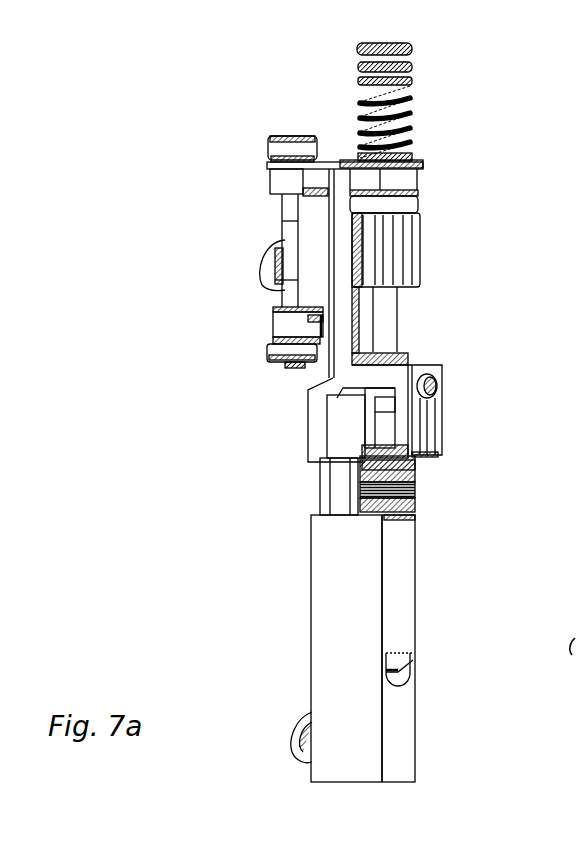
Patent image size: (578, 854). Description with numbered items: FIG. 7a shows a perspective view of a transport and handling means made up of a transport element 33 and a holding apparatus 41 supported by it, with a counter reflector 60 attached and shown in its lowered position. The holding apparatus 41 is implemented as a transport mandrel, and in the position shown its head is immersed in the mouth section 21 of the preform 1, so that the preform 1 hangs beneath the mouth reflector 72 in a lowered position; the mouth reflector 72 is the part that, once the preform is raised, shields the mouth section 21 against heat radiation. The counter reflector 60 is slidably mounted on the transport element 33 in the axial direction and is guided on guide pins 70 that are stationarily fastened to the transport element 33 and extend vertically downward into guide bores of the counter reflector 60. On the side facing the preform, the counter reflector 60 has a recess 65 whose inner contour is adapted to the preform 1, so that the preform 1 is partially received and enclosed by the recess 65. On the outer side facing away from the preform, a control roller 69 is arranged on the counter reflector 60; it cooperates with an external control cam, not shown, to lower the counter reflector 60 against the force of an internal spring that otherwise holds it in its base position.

The holding apparatus 41 is at (450, 112).
The transport element 33 is at (240, 220).
The mouth reflector 72 is at (435, 413).
The guide pins 70 is at (330, 487).
The mouth section 21 is at (405, 487).
The preform 1 is at (405, 525).
The counter reflector 60 is at (336, 592).
The recess 65 is at (395, 683).
The control roller 69 is at (300, 724).